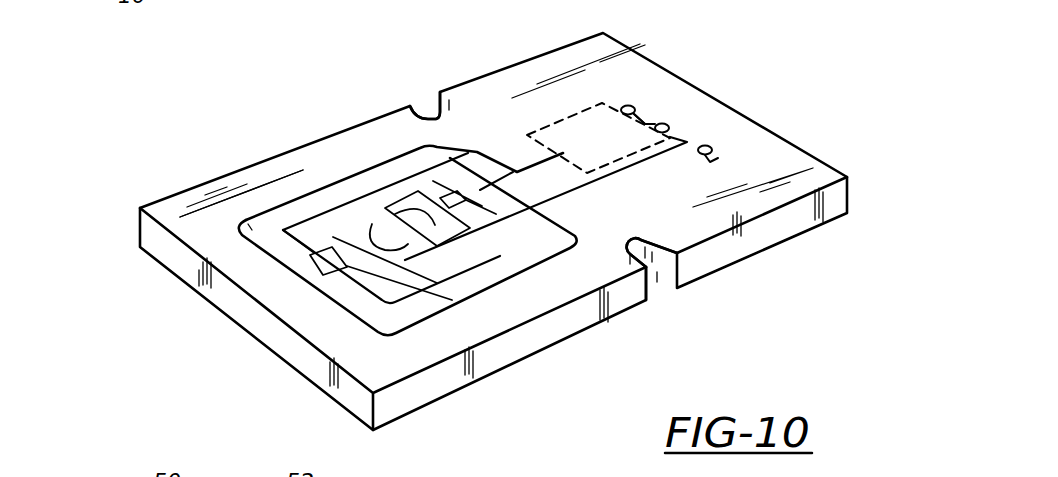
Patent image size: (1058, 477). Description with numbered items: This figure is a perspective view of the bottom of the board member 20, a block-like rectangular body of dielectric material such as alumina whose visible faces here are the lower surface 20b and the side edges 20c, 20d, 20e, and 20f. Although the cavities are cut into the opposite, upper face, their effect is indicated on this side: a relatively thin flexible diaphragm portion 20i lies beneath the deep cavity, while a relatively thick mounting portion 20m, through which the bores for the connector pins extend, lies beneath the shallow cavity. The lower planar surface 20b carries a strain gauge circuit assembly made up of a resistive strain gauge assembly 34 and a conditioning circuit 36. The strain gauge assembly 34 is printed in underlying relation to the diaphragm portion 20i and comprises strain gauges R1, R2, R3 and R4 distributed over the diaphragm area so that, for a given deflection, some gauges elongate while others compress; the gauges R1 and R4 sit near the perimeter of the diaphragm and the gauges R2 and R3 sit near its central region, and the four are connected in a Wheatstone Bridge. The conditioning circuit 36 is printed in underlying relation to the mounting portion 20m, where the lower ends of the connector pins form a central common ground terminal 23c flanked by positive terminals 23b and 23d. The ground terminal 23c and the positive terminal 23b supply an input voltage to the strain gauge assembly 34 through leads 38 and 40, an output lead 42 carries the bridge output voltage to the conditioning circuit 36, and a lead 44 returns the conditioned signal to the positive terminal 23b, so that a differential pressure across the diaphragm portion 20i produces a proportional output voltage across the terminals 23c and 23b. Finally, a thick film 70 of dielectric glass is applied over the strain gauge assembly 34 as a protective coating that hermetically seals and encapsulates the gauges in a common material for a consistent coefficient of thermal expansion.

The board member 20 is at (138, 228).
The lower surface 20b is at (343, 166).
The side edge 20c is at (760, 236).
The side edge 20d is at (295, 362).
The side edge 20e is at (275, 157).
The side edge 20f is at (840, 170).
The diaphragm portion 20i is at (311, 262).
The mounting portion 20m is at (587, 103).
The positive terminal 23b is at (628, 105).
The common ground terminal 23c is at (666, 131).
The positive terminal 23d is at (708, 152).
The strain gauge assembly 34 is at (398, 180).
The conditioning circuit 36 is at (565, 155).
The lead 38 is at (662, 180).
The lead 40 is at (598, 181).
The output lead 42 is at (488, 156).
The lead 44 is at (643, 114).
The thick film coating 70 is at (250, 228).
The strain gauge R1 is at (329, 271).
The strain gauge R2 is at (345, 225).
The strain gauge R3 is at (432, 238).
The strain gauge R4 is at (499, 228).